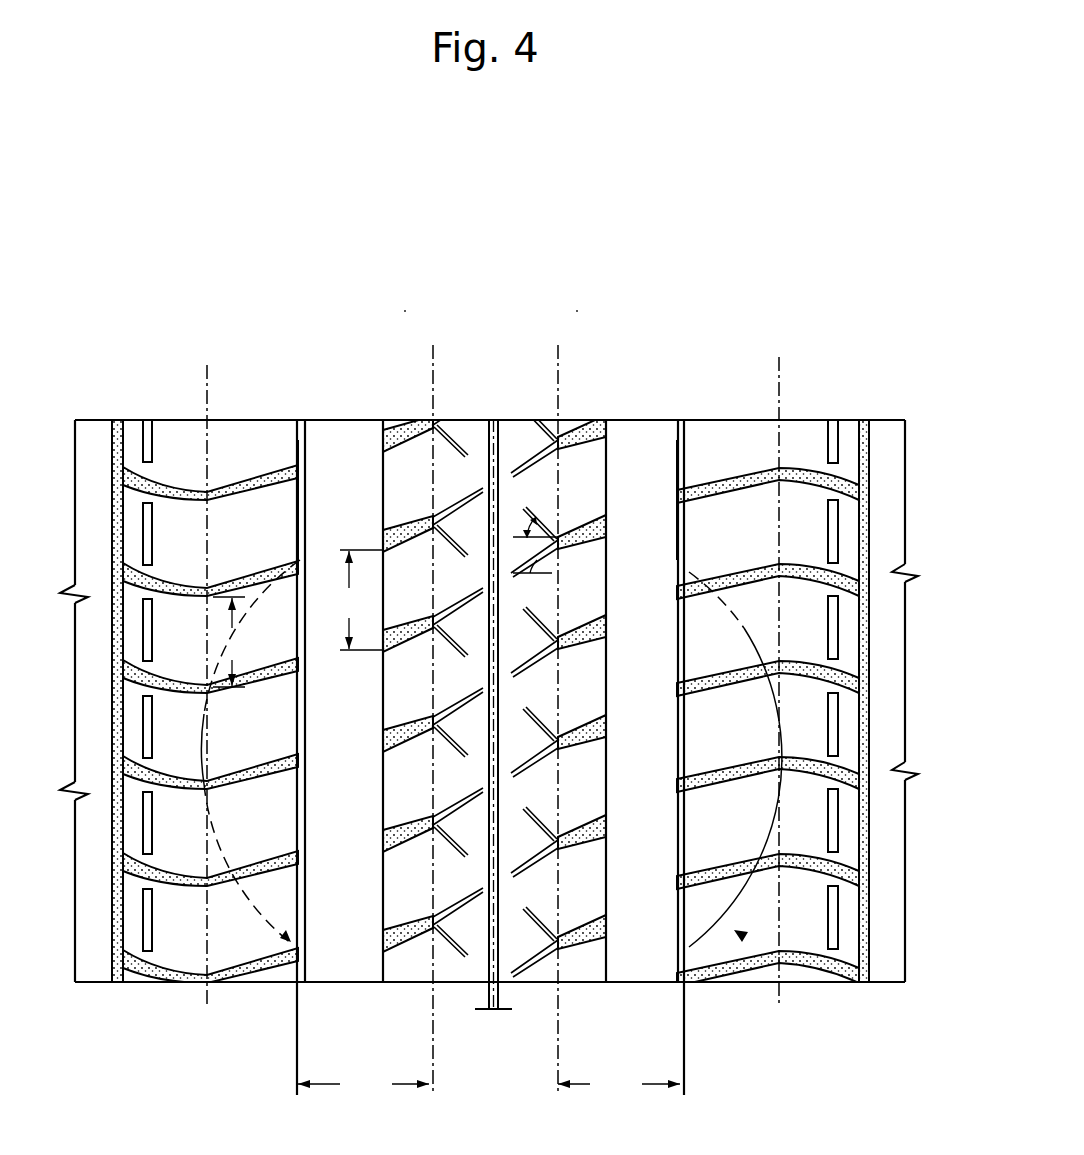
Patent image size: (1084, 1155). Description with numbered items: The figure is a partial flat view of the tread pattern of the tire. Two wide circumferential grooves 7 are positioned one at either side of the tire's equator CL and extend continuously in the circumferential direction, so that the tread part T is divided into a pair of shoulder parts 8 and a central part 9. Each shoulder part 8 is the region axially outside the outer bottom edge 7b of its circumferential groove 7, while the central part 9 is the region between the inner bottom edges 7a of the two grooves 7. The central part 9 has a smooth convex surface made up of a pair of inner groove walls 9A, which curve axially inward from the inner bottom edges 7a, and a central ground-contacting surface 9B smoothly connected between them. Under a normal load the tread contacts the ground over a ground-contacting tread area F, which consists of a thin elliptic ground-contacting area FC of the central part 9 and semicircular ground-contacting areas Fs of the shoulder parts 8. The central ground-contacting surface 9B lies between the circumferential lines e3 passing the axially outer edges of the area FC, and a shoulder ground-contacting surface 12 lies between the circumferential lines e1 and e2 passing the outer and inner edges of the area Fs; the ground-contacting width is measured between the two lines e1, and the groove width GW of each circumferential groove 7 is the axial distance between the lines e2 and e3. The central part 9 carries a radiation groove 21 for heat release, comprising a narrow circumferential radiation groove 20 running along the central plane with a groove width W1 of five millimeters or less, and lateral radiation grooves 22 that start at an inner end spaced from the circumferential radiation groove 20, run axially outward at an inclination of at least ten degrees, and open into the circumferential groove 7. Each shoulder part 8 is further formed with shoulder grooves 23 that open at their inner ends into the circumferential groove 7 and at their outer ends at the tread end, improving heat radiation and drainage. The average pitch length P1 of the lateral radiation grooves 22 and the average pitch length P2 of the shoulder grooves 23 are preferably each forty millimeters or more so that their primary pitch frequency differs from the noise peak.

The tread part T is at (678, 287).
The circumferential groove 7 is at (680, 1021).
The inner bottom edge 7a is at (381, 468).
The outer bottom edge 7b is at (306, 425).
The shoulder part 8 is at (838, 1023).
The central part 9 is at (577, 304).
The inner groove wall 9A is at (494, 683).
The central ground-contacting surface 9B is at (553, 347).
The shoulder ground-contacting surface 12 is at (779, 352).
The circumferential radiation groove 20 is at (495, 682).
The radiation groove 21 is at (548, 628).
The lateral radiation groove 22 is at (495, 682).
The shoulder groove 23 is at (800, 470).
The circumferential line e1 is at (207, 365).
The circumferential line e2 is at (280, 455).
The circumferential line e3 is at (433, 372).
The tire's equator CL is at (496, 412).
The average pitch length of the lateral radiation groove P1 is at (357, 600).
The average pitch length of the shoulder groove P2 is at (230, 642).
The groove width GW is at (489, 1084).
The groove width of the circumferential radiation groove W1 is at (496, 1012).
The ground-contacting tread area F is at (736, 931).
The ground-contacting area of the shoulder part Fs is at (752, 884).
The ground-contacting area of the central part FC is at (560, 890).